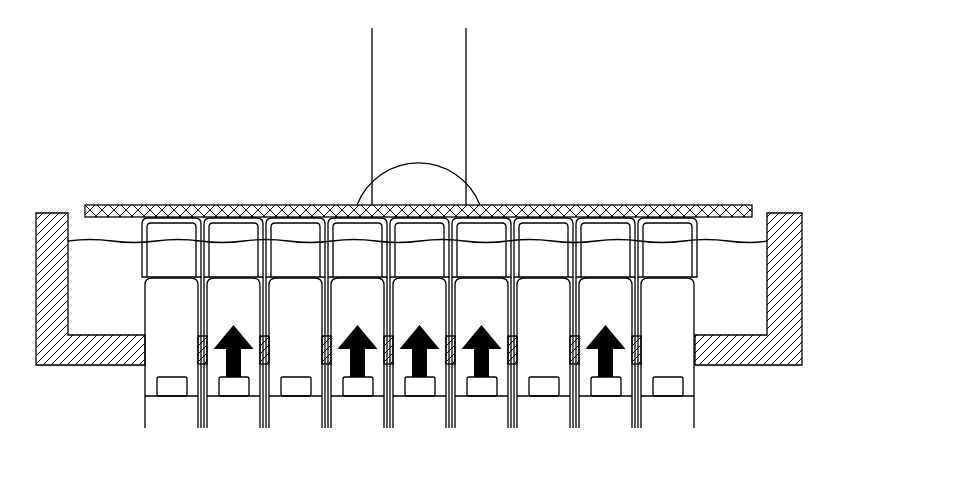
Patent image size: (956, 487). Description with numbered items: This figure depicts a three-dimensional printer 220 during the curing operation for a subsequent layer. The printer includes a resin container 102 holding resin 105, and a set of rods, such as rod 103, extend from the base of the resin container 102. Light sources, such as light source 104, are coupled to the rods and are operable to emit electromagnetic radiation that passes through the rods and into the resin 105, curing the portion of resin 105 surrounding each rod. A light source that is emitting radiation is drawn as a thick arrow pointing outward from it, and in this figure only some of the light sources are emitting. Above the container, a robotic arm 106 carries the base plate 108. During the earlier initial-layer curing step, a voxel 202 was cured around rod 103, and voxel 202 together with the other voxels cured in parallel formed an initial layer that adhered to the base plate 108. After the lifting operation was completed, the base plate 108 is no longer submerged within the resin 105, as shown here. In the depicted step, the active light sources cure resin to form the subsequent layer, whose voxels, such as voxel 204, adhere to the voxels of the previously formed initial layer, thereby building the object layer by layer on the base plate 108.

The cooling system assembly 220 is at (212, 69).
The resin container 102 is at (802, 221).
The base plate 108 is at (210, 205).
The robotic arm 106 is at (466, 128).
The resin 105 is at (750, 240).
The voxel 202 is at (142, 250).
The rod 103 is at (145, 300).
The light source 104 is at (145, 400).
The voxel 204 is at (203, 313).